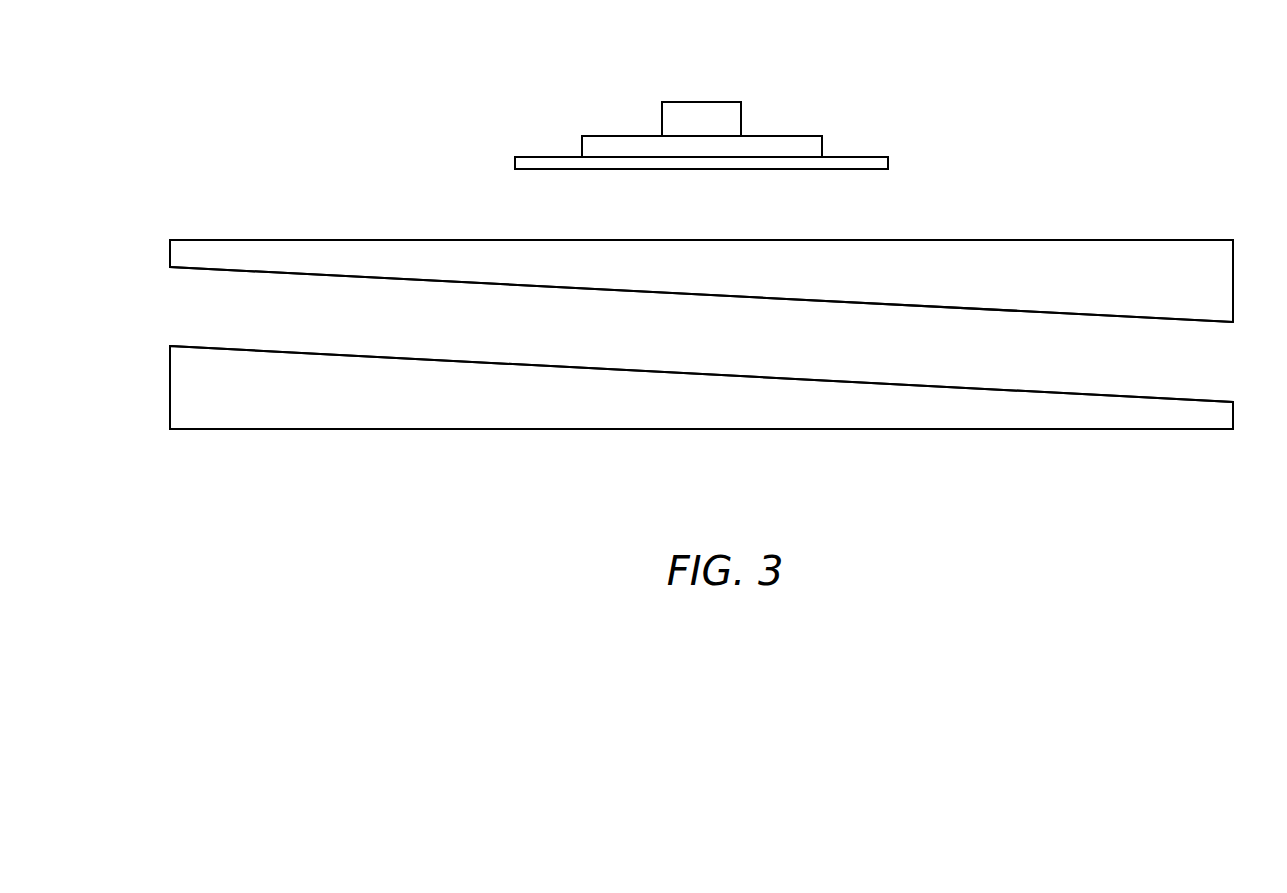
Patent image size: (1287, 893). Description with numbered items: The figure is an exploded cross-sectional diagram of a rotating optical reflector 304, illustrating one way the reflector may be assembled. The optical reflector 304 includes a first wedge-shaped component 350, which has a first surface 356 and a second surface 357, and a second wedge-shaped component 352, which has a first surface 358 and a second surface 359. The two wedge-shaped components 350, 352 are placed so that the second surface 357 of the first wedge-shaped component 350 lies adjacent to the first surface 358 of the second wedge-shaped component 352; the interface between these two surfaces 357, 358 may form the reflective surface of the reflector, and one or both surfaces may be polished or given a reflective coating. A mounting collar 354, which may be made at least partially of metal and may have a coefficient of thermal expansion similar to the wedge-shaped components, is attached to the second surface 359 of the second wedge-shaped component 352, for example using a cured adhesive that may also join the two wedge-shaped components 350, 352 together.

The optical reflector 304 is at (258, 85).
The first wedge-shaped component 350 is at (369, 389).
The second wedge-shaped component 352 is at (1158, 275).
The mounting collar 354 is at (766, 131).
The first surface 356 is at (822, 433).
The second surface 357 is at (658, 374).
The first surface 358 is at (999, 306).
The second surface 359 is at (363, 236).